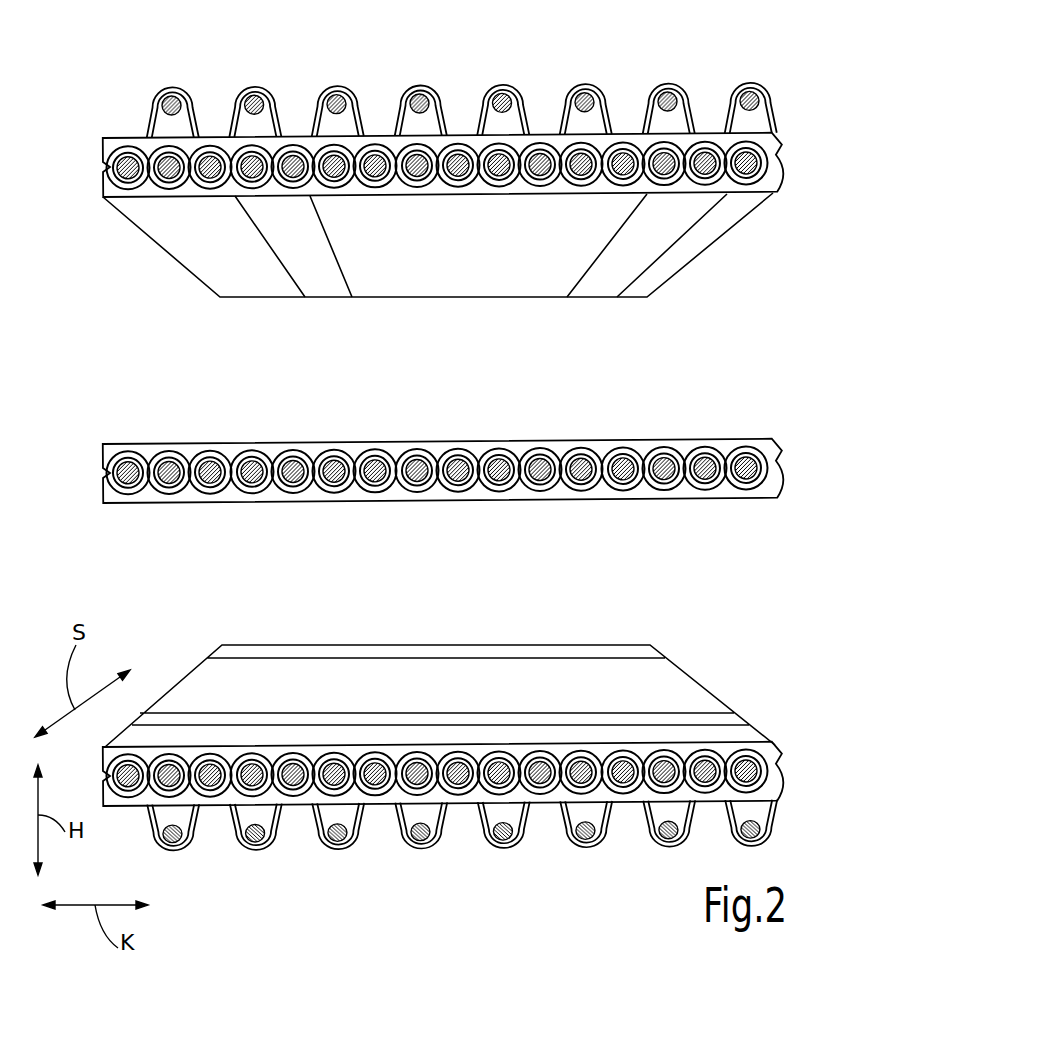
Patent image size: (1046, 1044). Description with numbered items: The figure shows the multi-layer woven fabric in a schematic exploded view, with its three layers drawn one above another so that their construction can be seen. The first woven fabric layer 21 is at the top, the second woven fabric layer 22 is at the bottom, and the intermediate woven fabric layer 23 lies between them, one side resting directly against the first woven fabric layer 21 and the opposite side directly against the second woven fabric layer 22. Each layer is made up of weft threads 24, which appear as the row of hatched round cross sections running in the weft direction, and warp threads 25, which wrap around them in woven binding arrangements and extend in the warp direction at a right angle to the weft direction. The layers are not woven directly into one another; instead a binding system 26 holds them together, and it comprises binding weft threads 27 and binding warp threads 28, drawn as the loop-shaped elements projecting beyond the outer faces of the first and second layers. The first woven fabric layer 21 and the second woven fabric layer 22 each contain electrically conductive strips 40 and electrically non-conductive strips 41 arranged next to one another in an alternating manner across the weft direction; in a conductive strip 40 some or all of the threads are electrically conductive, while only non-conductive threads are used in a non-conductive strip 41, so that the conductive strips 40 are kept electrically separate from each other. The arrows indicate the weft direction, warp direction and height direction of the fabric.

The first woven fabric layer 21 is at (475, 279).
The second woven fabric layer 22 is at (135, 738).
The intermediate woven fabric layer 23 is at (497, 455).
The weft threads 24 is at (440, 172).
The warp threads 25 is at (476, 148).
The binding system 26 is at (490, 145).
The binding weft threads 27 is at (505, 90).
The binding warp threads 28 is at (262, 96).
The electrically conductive strips 40 is at (205, 265).
The electrically non-conductive strips 41 is at (322, 275).